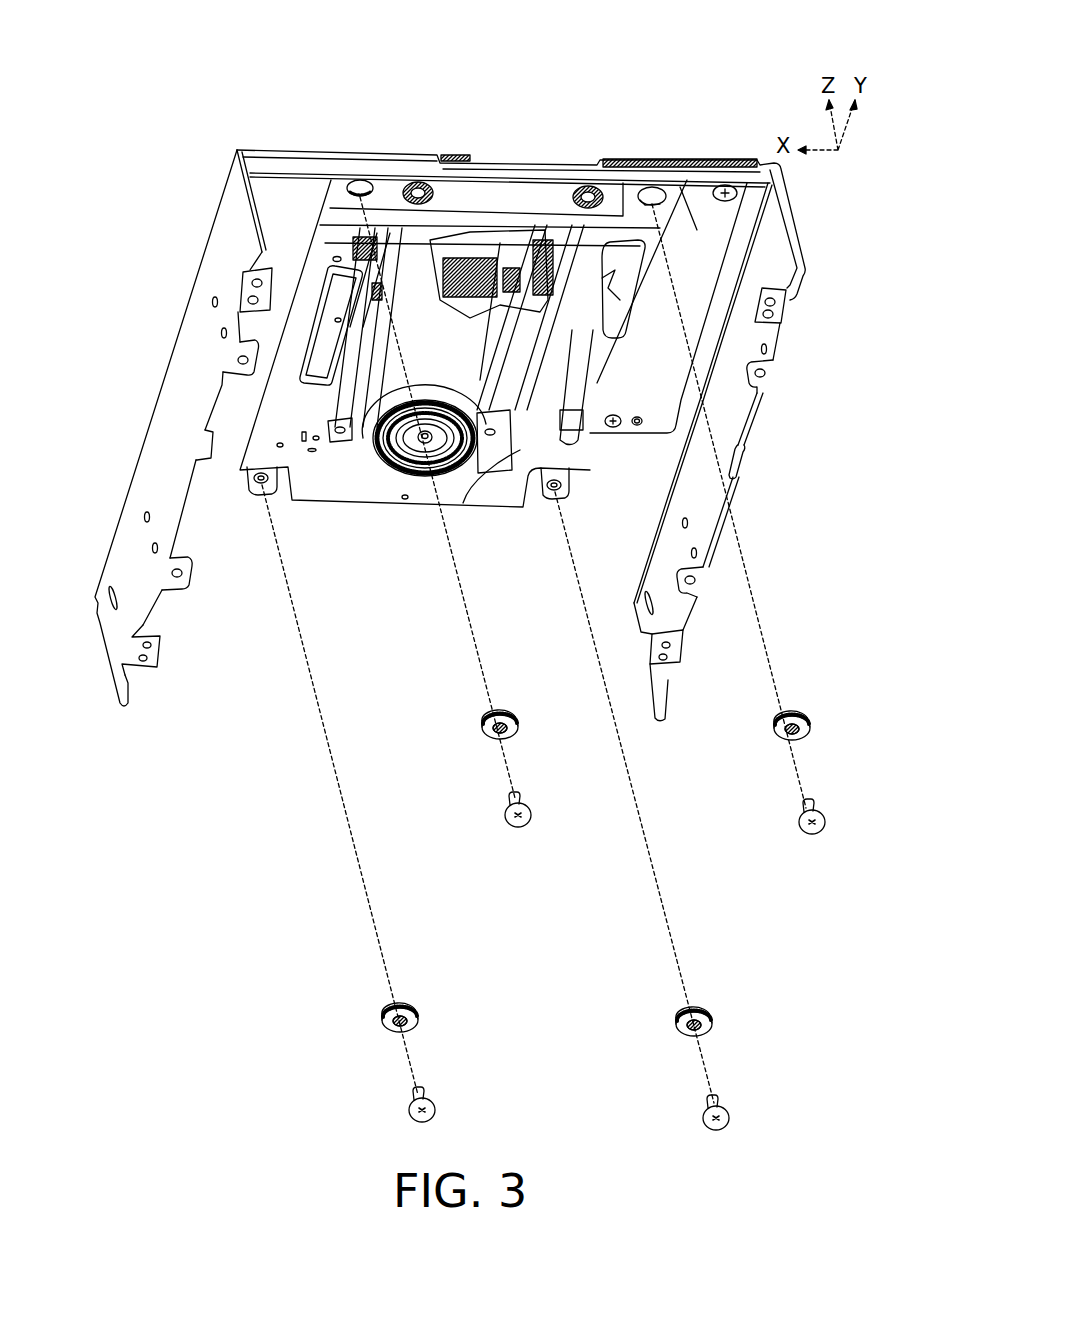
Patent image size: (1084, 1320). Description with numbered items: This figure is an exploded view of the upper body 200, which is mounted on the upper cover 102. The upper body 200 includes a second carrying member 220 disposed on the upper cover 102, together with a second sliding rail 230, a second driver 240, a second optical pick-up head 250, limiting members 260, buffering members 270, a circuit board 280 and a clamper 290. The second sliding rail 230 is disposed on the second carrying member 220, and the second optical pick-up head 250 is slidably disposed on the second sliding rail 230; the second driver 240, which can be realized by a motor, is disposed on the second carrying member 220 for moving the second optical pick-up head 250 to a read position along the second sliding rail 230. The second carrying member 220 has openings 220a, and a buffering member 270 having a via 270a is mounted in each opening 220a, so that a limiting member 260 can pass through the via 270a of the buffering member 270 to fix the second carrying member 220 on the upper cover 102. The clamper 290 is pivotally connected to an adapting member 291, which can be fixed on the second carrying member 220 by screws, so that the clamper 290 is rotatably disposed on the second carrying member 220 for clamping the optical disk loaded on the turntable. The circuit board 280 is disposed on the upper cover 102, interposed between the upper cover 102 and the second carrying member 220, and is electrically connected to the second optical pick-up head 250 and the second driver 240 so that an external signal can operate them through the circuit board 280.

The upper cover 102 is at (217, 210).
The upper body 200 is at (200, 82).
The second carrying member 220 is at (572, 457).
The opening 220a is at (363, 180).
The second sliding rail 230 is at (415, 178).
The second driver 240 is at (372, 276).
The second optical pick-up head 250 is at (493, 245).
The limiting member 260 is at (532, 812).
The buffering member 270 is at (518, 722).
The via 270a is at (497, 737).
The circuit board 280 is at (717, 230).
The clamper 290 is at (432, 465).
The adapting member 291 is at (368, 452).